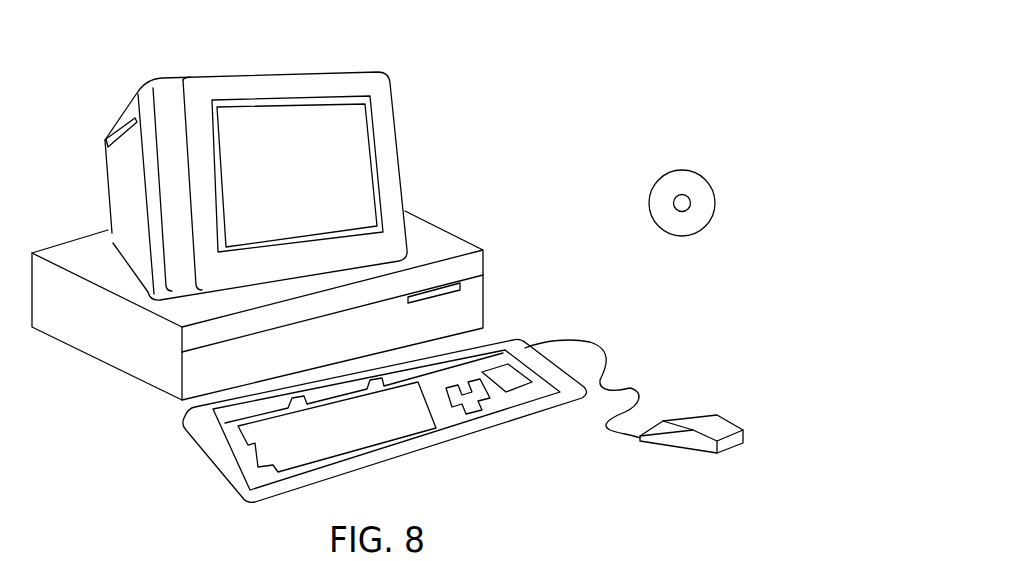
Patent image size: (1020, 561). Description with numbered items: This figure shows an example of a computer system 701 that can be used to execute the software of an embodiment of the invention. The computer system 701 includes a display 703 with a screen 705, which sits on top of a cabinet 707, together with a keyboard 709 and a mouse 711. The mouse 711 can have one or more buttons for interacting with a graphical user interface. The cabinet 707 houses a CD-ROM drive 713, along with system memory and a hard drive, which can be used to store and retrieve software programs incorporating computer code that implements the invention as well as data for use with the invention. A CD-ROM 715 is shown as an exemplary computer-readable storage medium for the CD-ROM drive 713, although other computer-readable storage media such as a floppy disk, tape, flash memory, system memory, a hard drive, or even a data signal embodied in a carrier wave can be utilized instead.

The computer system 701 is at (587, 66).
The display 703 is at (399, 175).
The screen 705 is at (370, 140).
The cabinet 707 is at (138, 380).
The keyboard 709 is at (400, 463).
The mouse 711 is at (708, 418).
The CD-ROM drive 713 is at (465, 280).
The CD-ROM 715 is at (698, 172).